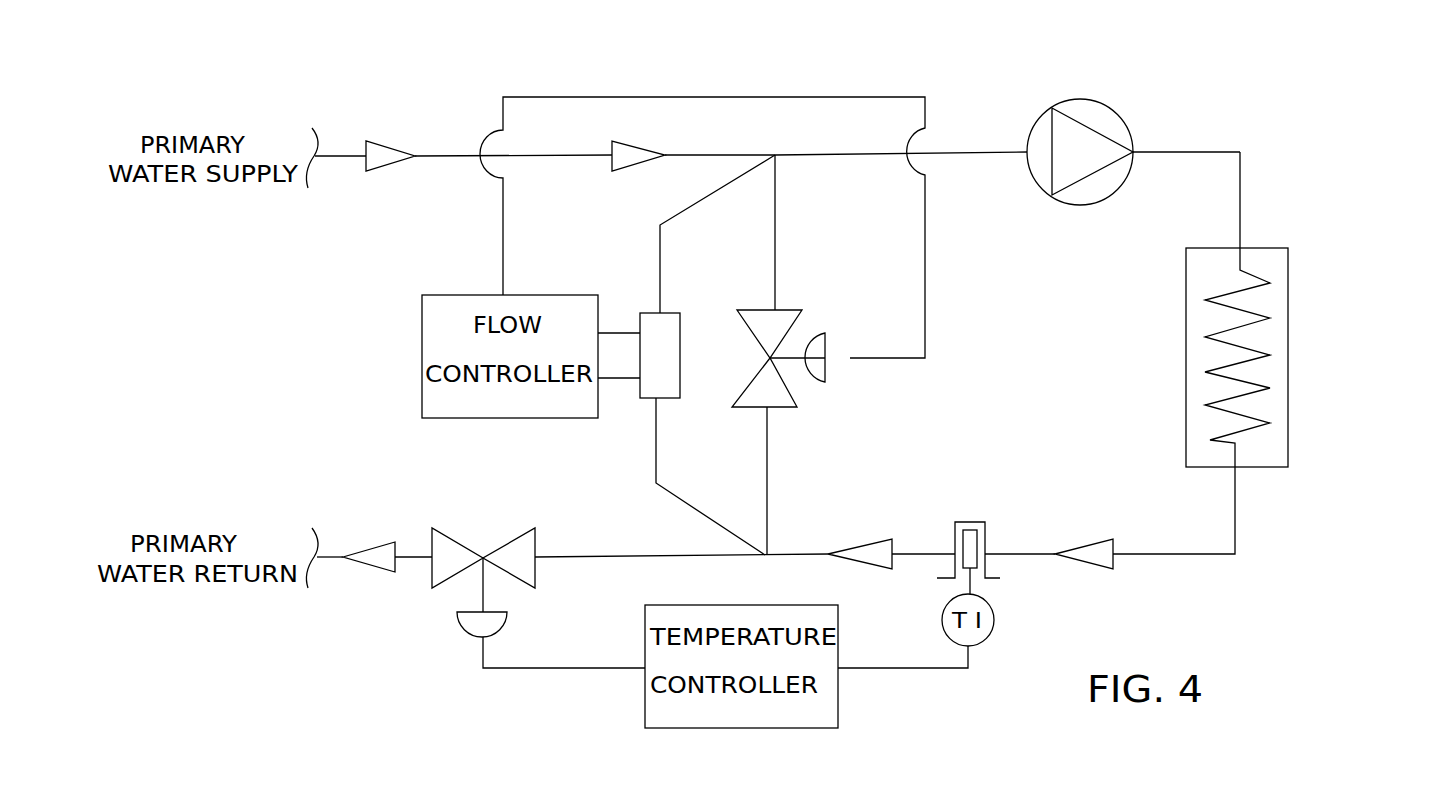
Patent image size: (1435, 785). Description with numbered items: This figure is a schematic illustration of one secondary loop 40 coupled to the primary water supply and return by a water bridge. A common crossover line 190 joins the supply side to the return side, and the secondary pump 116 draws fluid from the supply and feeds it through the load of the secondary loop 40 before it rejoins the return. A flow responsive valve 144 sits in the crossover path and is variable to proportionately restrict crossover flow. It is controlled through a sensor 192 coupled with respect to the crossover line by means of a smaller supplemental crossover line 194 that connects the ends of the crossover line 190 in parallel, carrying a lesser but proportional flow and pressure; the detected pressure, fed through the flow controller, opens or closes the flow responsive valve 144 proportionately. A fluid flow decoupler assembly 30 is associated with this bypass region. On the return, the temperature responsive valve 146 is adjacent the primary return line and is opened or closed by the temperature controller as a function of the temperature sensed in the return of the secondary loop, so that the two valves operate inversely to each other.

The crossover line 190 is at (772, 183).
The flow responsive valve 144 is at (808, 310).
The supplemental crossover line 194 is at (678, 217).
The sensor 192 is at (640, 313).
The secondary pump 116 is at (1125, 141).
The secondary loop 40 is at (1302, 298).
The fluid flow decoupler assembly 30 is at (803, 420).
The temperature responsive valve 146 is at (440, 567).